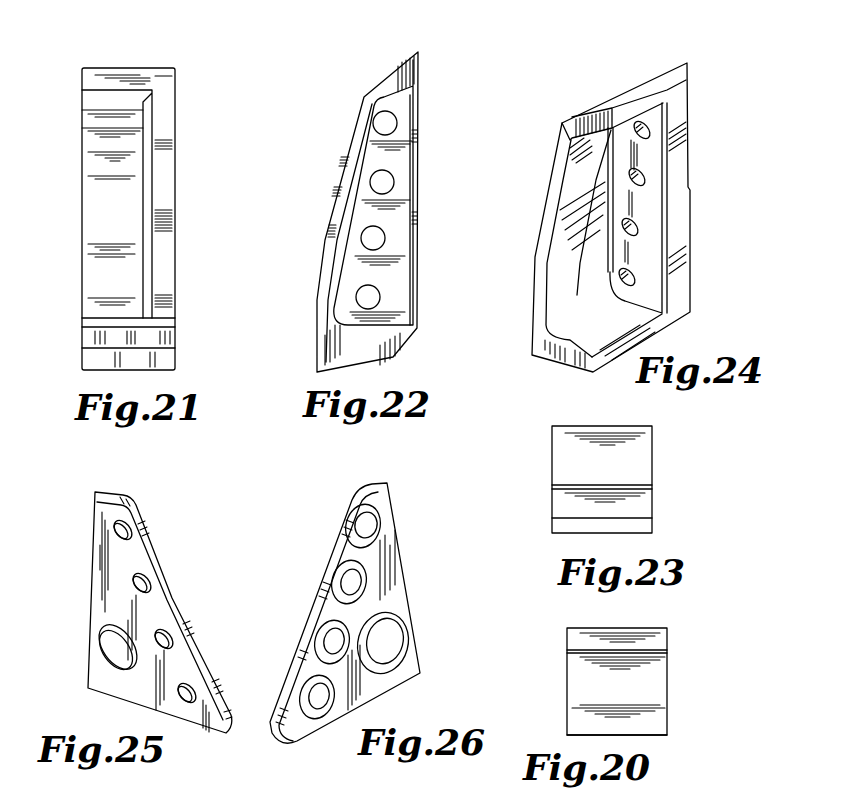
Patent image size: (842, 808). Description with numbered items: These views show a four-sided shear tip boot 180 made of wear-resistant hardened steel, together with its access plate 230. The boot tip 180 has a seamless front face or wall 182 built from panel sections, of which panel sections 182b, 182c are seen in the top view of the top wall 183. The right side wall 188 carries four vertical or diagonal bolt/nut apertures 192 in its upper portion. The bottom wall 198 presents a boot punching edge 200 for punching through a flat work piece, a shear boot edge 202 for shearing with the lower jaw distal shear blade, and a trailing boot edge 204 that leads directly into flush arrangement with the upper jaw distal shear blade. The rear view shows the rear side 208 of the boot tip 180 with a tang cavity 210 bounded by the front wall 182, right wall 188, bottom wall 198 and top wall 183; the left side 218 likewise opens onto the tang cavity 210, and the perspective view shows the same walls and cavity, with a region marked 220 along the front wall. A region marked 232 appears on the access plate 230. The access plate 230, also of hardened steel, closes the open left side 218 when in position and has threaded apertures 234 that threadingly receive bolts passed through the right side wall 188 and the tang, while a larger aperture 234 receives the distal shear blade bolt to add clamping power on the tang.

In FIG. 21, the four-sided shear tip boot 180 is at (205, 84).
In FIG. 22, the four-sided shear tip boot 180 is at (430, 120).
In FIG. 24, the four-sided shear tip boot 180 is at (586, 102).
In FIG. 23, the four-sided shear tip boot 180 is at (670, 462).
In FIG. 20, the four-sided shear tip boot 180 is at (684, 633).
In FIG. 21, the front face or wall 182 is at (120, 228).
In FIG. 22, the front face or wall 182 is at (337, 182).
In FIG. 24, the front face or wall 182 is at (583, 155).
In FIG. 23, the panel section 182b is at (582, 527).
In FIG. 23, the panel section 182c is at (570, 498).
In FIG. 21, the top wall 183 is at (128, 70).
In FIG. 22, the top wall 183 is at (380, 82).
In FIG. 24, the top wall 183 is at (637, 90).
In FIG. 23, the top wall 183 is at (572, 447).
In FIG. 21, the right side wall 188 is at (175, 217).
In FIG. 22, the right side wall 188 is at (395, 243).
In FIG. 24, the right side wall 188 is at (650, 152).
In FIG. 24, the bolt/nut apertures 192 is at (637, 272).
In FIG. 21, the bottom wall 198 is at (162, 355).
In FIG. 22, the bottom wall 198 is at (388, 315).
In FIG. 24, the bottom wall 198 is at (603, 325).
In FIG. 20, the bottom wall 198 is at (655, 677).
In FIG. 20, the boot punching edge 200 is at (647, 740).
In FIG. 20, the shear boot edge 202 is at (567, 678).
In FIG. 20, the trailing boot edge 204 is at (567, 640).
In FIG. 21, the rear side 208 is at (163, 138).
In FIG. 21, the tang cavity 210 is at (97, 152).
In FIG. 22, the tang cavity 210 is at (382, 203).
In FIG. 22, the left side 218 is at (413, 75).
In FIG. 24, the lower wall portion 220 is at (580, 207).
In FIG. 25, the access or side plate 230 is at (145, 517).
In FIG. 26, the access or side plate 230 is at (402, 523).
In FIG. 25, the mounting holes 232 is at (147, 580).
In FIG. 26, the mounting holes 232 is at (310, 680).
In FIG. 25, the threaded apertures 234 is at (125, 650).
In FIG. 26, the threaded apertures 234 is at (405, 630).